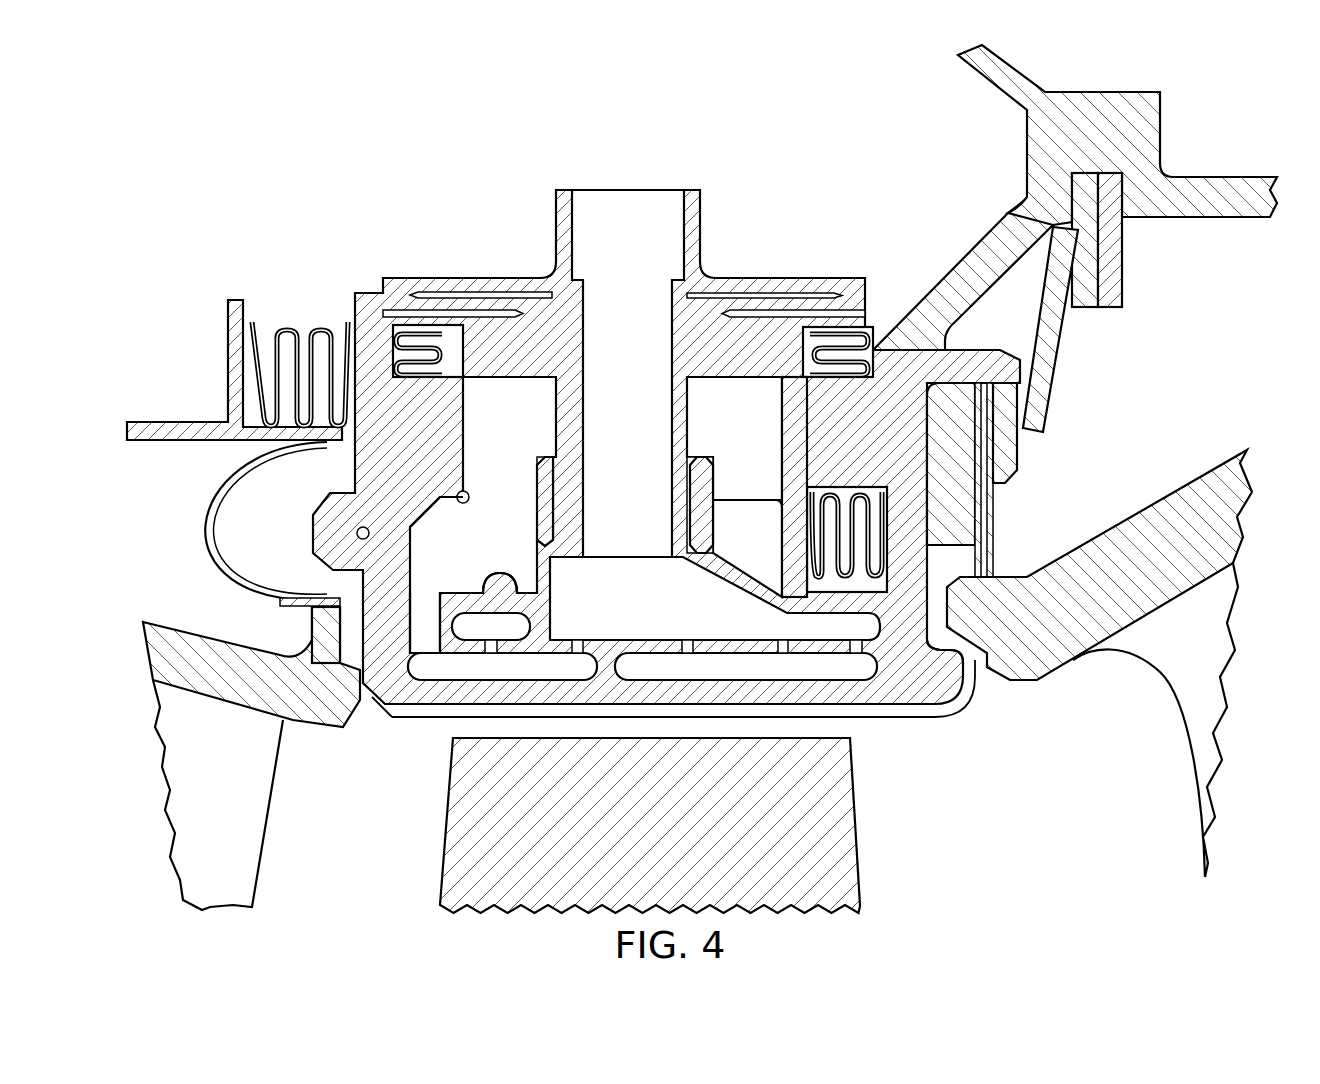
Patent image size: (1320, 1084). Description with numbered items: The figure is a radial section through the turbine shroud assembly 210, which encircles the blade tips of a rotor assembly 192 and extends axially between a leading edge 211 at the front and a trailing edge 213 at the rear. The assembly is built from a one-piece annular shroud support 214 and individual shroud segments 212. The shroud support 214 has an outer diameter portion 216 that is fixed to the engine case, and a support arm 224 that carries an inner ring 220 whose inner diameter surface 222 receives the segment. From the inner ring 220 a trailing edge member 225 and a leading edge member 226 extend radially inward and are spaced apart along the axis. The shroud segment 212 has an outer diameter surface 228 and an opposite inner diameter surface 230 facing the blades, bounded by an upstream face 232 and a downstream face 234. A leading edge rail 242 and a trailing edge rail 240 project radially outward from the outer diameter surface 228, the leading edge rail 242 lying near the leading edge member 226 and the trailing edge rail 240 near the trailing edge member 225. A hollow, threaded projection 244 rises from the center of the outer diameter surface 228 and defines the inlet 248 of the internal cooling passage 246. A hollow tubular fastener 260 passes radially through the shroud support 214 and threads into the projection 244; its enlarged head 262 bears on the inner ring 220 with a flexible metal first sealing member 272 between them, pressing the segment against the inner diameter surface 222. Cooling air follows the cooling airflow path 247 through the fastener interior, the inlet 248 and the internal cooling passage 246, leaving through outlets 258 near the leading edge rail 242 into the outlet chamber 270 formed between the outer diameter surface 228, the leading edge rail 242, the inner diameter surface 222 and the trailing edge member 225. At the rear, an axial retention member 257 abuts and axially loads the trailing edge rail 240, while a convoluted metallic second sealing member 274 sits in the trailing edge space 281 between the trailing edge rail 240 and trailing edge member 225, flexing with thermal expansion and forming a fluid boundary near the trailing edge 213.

The rotor assembly 192 is at (650, 825).
The turbine shroud assembly 210 is at (258, 250).
The leading edge 211 is at (320, 642).
The shroud segment 212 is at (425, 740).
The trailing edge 213 is at (937, 617).
The shroud support 214 is at (1190, 152).
The outer diameter portion 216 is at (1115, 92).
The inner ring 220 is at (805, 420).
The inner diameter surface 222 is at (470, 496).
The support arm 224 is at (985, 262).
The trailing edge member 225 is at (795, 545).
The leading edge member 226 is at (318, 533).
The outer diameter surface 228 is at (508, 572).
The inner diameter surface 230 is at (785, 718).
The upstream face 232 is at (353, 670).
The downstream face 234 is at (922, 666).
The trailing edge rail 240 is at (910, 550).
The leading edge rail 242 is at (398, 524).
The projection 244 is at (705, 462).
The internal cooling passage 246 is at (620, 488).
The cooling airflow path 247 is at (648, 345).
The inlet 248 is at (552, 504).
The axial retention member 257 is at (985, 560).
The outlets 258 is at (418, 607).
The fastener 260 is at (700, 205).
The enlarged head 262 is at (465, 326).
The outlet chamber 270 is at (596, 515).
The first sealing member 272 is at (855, 350).
The second sealing member 274 is at (897, 522).
The trailing edge space 281 is at (838, 580).